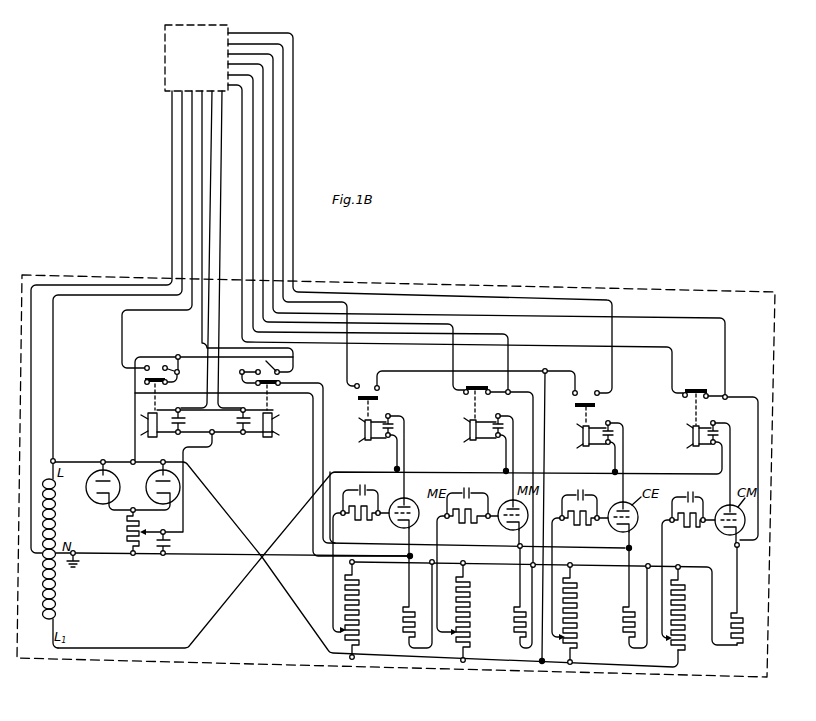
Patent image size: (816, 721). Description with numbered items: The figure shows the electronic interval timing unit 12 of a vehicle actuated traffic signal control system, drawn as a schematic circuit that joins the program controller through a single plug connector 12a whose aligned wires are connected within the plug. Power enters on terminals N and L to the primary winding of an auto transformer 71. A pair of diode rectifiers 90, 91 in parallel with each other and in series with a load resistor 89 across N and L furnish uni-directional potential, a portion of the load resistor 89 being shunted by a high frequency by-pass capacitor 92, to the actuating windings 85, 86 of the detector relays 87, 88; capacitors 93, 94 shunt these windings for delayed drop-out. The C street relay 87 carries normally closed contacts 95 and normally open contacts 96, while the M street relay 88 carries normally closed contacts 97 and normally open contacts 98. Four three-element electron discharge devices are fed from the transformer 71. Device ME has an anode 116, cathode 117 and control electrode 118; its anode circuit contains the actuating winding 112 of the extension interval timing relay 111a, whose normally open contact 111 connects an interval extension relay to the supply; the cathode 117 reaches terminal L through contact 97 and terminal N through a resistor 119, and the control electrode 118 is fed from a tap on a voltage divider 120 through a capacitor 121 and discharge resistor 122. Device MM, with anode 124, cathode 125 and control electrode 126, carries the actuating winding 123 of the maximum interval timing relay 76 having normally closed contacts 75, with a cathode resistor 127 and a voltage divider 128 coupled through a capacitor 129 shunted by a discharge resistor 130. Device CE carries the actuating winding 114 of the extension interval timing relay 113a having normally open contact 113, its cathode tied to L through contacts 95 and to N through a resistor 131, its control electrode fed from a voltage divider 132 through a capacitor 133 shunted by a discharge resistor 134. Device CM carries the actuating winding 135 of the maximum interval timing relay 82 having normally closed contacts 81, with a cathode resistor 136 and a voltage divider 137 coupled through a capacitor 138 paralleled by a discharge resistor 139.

The electronic interval timing unit 12 is at (433, 285).
The plug connector 12a is at (236, 27).
The auto transformer 71 is at (60, 598).
The normally closed contacts 75 is at (483, 387).
The maximum interval timing relay 76 is at (470, 440).
The normally closed contacts 81 is at (698, 389).
The maximum interval timing relay 82 is at (692, 446).
The actuating winding 85 is at (279, 430).
The actuating winding 86 is at (152, 438).
The detector relay 87 is at (266, 438).
The detector relay 88 is at (180, 434).
The load resistor 89 is at (126, 534).
The diode rectifier 90 is at (96, 501).
The diode rectifier 91 is at (148, 498).
The high frequency by-pass capacitor 92 is at (172, 546).
The capacitor 93 is at (240, 434).
The capacitor 94 is at (186, 420).
The normally closed contacts 95 is at (280, 386).
The normally open contacts 96 is at (260, 367).
The normally closed contacts 97 is at (152, 383).
The normally open contacts 98 is at (163, 366).
The normally open contact 111 is at (379, 400).
The extension interval timing relay 111a is at (365, 438).
The actuating winding 112 is at (364, 428).
The normally open contact 113 is at (596, 405).
The extension interval timing relay 113a is at (583, 446).
The actuating winding 114 is at (582, 431).
The anode 116 is at (409, 499).
The cathode 117 is at (403, 527).
The control electrode 118 is at (416, 512).
The resistor 119 is at (403, 627).
The voltage divider 120 is at (360, 606).
The capacitor 121 is at (365, 486).
The discharge resistor 122 is at (358, 522).
The actuating winding 123 is at (468, 424).
The anode 124 is at (505, 502).
The cathode 125 is at (512, 531).
The control electrode 126 is at (539, 503).
The resistor 127 is at (513, 630).
The voltage divider 128 is at (472, 609).
The capacitor 129 is at (466, 486).
The discharge resistor 130 is at (472, 524).
The resistor 131 is at (622, 633).
The voltage divider 132 is at (579, 606).
The capacitor 133 is at (585, 490).
The discharge resistor 134 is at (580, 526).
The actuating winding 135 is at (692, 431).
The resistor 136 is at (742, 618).
The voltage divider 137 is at (687, 596).
The capacitor 138 is at (688, 492).
The discharge resistor 139 is at (685, 528).